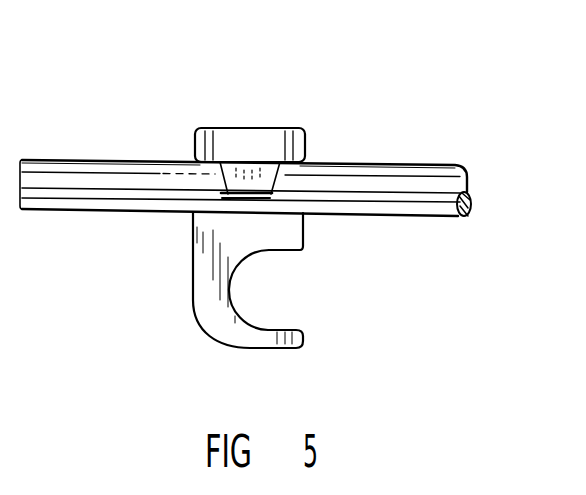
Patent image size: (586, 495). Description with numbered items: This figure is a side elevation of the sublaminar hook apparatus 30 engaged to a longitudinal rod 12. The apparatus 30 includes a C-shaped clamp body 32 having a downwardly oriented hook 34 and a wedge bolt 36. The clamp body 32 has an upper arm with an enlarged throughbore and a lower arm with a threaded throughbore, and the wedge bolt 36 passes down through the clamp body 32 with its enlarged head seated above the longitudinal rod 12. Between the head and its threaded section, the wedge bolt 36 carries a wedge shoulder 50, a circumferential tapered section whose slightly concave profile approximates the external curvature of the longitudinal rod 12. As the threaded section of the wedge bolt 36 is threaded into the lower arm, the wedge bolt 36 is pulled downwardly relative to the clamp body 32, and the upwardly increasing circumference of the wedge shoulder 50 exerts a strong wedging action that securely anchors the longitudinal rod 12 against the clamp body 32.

The longitudinal rod 12 is at (387, 185).
The sublaminar hook apparatus 30 is at (256, 182).
The C-shaped clamp body 32 is at (241, 137).
The hook 34 is at (213, 293).
The wedge bolt 36 is at (287, 164).
The wedge shoulder 50 is at (243, 178).